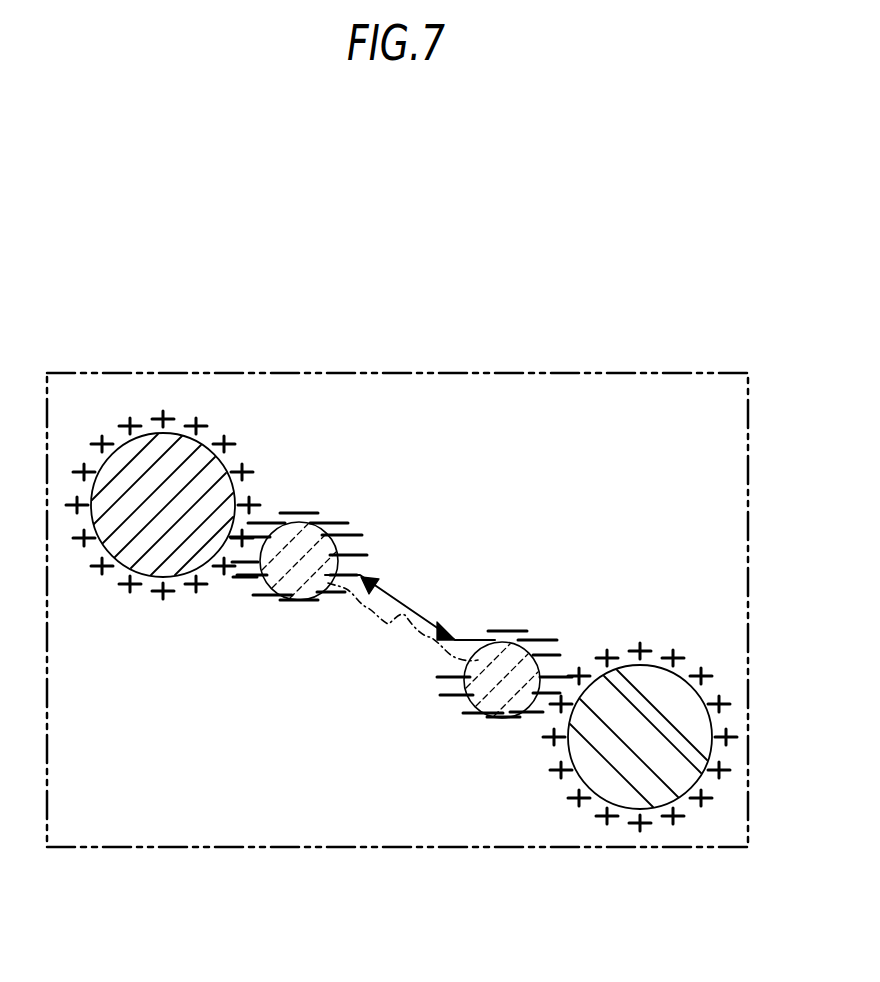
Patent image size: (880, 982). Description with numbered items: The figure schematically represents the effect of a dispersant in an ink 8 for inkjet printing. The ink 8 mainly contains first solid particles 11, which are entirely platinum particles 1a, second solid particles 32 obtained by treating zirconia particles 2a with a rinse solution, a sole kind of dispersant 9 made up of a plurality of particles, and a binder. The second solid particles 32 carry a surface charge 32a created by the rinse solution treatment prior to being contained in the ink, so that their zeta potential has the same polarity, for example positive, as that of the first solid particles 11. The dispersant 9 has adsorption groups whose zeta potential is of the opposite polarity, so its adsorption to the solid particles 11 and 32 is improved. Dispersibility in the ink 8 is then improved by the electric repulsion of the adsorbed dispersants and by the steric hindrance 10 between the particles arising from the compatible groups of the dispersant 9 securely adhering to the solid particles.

The ink 8 is at (397, 372).
The platinum particles 1a is at (170, 562).
The first solid particles 11 is at (237, 452).
The dispersant 9 is at (287, 600).
The steric hindrance 10 is at (372, 624).
The zirconia particles 2a is at (586, 768).
The second solid particles 32 is at (593, 663).
The surface charge 32a is at (618, 628).